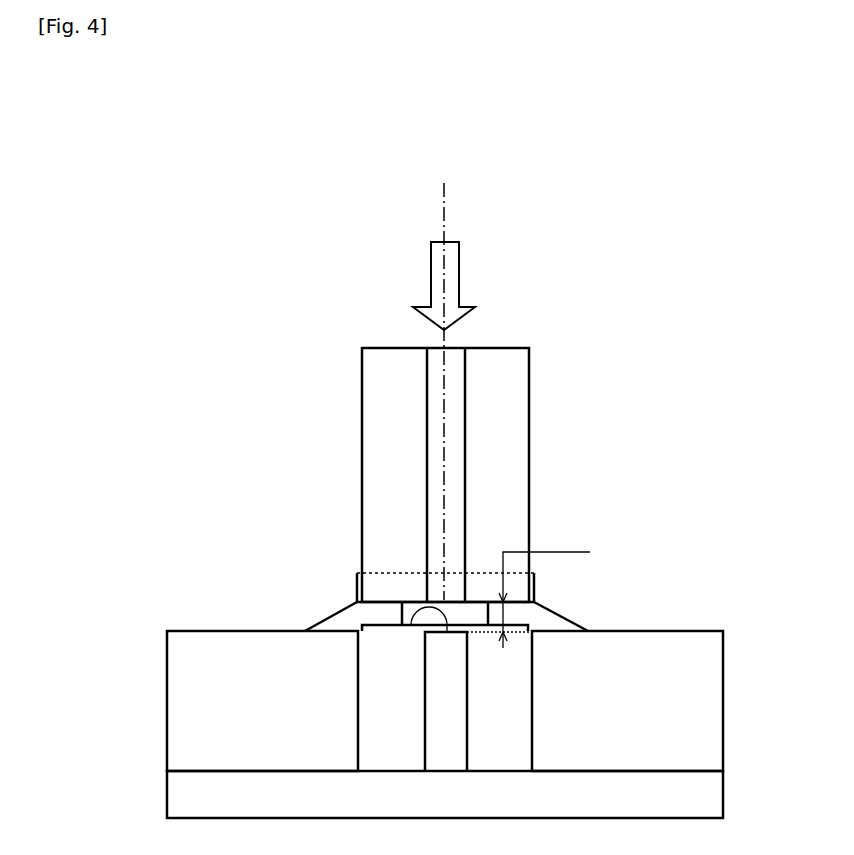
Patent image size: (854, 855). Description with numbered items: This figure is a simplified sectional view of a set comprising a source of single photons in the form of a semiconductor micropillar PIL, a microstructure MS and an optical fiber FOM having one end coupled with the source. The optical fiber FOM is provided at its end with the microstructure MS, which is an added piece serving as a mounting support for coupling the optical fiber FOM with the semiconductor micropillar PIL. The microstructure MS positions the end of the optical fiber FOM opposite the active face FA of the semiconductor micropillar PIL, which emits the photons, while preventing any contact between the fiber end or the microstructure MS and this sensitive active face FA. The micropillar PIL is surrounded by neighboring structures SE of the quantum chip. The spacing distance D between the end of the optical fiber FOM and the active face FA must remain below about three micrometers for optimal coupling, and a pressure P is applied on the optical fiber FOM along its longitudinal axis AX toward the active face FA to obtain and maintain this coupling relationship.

The longitudinal axis AX is at (441, 204).
The pressure P is at (450, 270).
The single-mode optical fiber FOM is at (510, 442).
The microstructure MS is at (341, 612).
The structures SE is at (210, 650).
The semiconductor micropillar PIL is at (457, 712).
The active face FA is at (411, 625).
The spacing distance D is at (540, 592).